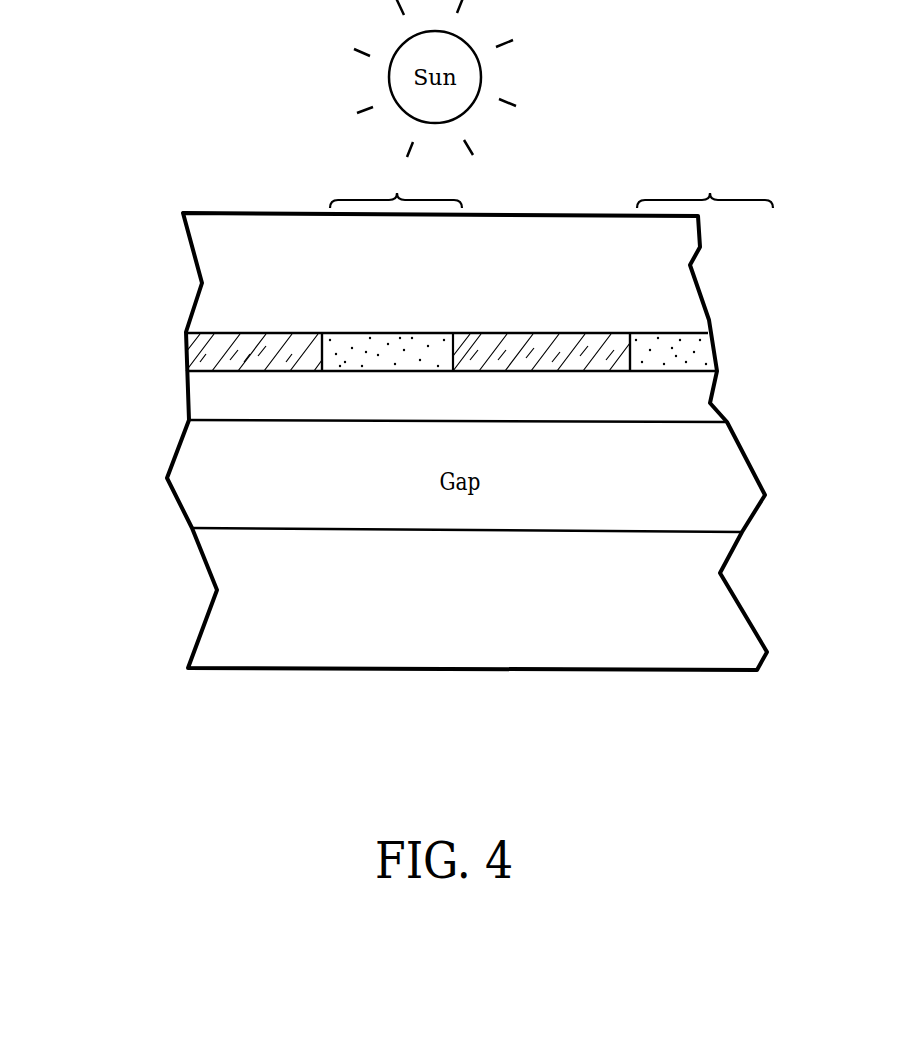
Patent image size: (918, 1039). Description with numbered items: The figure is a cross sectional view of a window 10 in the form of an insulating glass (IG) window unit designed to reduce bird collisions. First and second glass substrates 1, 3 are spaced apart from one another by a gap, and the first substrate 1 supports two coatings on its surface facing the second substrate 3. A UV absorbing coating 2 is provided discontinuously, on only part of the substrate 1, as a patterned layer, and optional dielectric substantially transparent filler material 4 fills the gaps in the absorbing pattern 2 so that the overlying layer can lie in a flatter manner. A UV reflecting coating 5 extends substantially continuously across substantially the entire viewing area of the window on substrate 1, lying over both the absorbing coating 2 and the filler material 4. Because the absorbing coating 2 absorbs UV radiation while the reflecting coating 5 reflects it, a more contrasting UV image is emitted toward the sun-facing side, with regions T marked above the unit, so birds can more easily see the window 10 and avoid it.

The window 10 is at (157, 172).
The first substrate 1 is at (218, 269).
The UV absorbing coating 2 is at (205, 352).
The second substrate 3 is at (218, 630).
The filler material 4 is at (372, 343).
The UV reflecting coating 5 is at (207, 393).
The transmissive region T is at (397, 192).